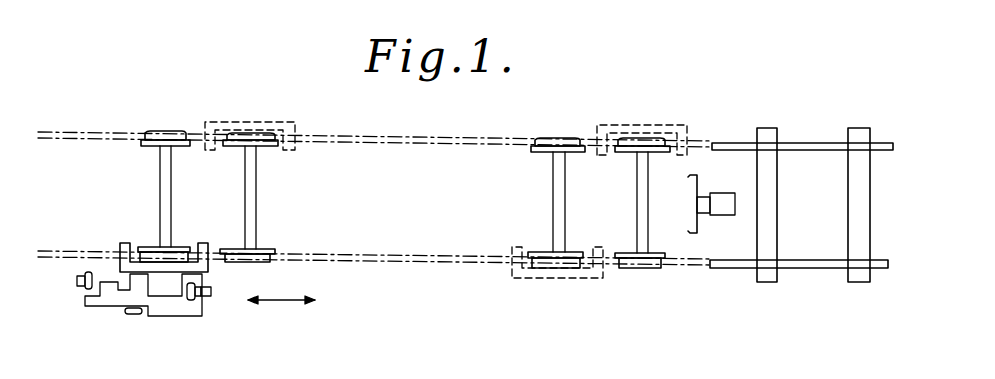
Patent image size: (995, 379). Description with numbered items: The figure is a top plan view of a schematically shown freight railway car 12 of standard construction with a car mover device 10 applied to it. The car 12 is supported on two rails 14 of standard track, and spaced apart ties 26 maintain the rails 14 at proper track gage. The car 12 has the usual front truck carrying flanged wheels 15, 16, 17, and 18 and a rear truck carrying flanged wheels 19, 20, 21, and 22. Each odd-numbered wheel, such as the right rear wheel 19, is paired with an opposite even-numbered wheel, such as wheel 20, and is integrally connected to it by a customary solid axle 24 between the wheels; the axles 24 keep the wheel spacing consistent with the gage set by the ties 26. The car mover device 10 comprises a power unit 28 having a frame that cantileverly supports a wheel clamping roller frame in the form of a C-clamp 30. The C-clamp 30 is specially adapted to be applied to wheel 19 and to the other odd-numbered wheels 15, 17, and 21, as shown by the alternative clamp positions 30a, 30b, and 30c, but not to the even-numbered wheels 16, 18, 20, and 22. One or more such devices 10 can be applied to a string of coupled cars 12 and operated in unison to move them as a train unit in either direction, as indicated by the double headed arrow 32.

The car mover device 10 is at (116, 313).
The freight railway car 12 is at (718, 186).
The rails 14 is at (830, 151).
The flanged wheel 15 is at (568, 252).
The flanged wheel 16 is at (548, 136).
The flanged wheel 17 is at (628, 153).
The flanged wheel 18 is at (645, 268).
The right rear wheel 19 is at (150, 246).
The flanged wheel 20 is at (144, 138).
The flanged wheel 21 is at (262, 150).
The flanged wheel 22 is at (243, 262).
The solid axle 24 is at (168, 193).
The ties 26 is at (845, 273).
The power unit 28 is at (167, 316).
The C-clamp 30 is at (123, 243).
The clamp position 30a is at (263, 122).
The clamp position 30b is at (530, 277).
The clamp position 30c is at (647, 125).
The double headed arrow 32 is at (278, 302).